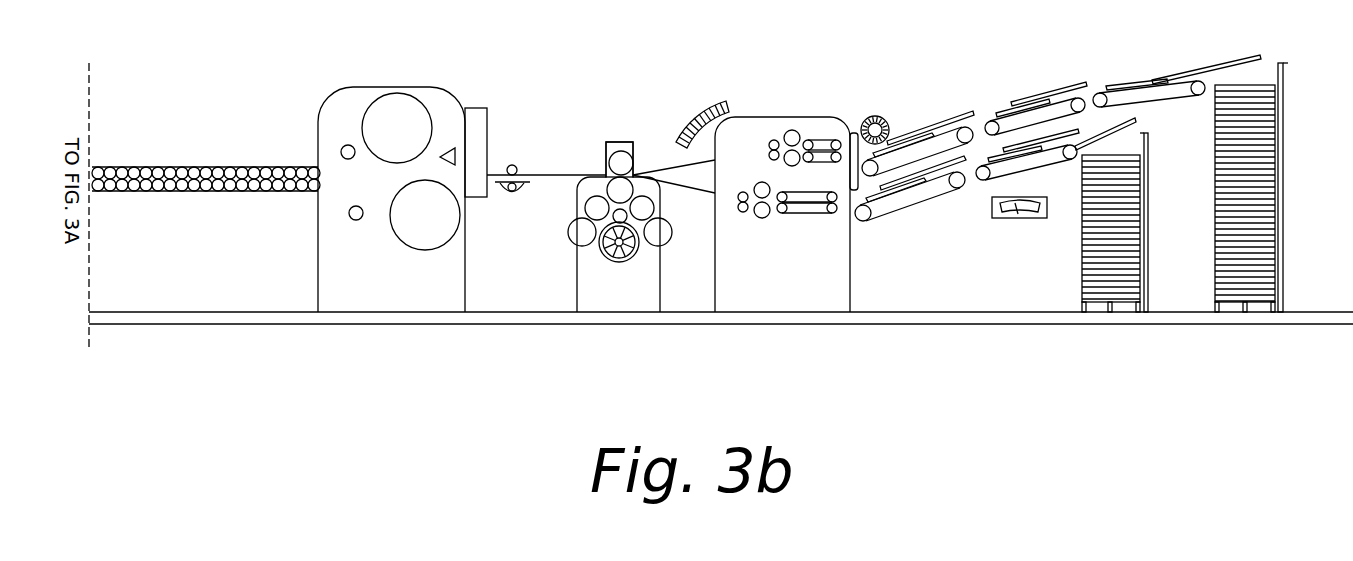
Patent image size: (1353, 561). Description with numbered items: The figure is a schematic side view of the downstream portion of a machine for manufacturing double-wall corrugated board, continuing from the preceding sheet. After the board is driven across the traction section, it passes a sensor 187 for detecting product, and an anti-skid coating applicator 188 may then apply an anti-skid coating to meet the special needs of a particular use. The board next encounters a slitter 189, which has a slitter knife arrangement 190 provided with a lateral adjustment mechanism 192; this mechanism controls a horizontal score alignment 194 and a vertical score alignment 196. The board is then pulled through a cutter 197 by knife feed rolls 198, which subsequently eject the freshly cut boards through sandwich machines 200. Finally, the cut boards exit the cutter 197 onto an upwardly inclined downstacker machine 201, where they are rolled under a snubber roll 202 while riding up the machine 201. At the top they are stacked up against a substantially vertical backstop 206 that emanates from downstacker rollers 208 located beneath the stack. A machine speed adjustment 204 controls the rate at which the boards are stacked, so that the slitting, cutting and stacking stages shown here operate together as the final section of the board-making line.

The sensor 187 is at (447, 148).
The anti-skid coating applicator 188 is at (512, 163).
The slitter 189 is at (607, 140).
The slitter knife arrangement 190 is at (623, 160).
The lateral adjustment mechanism 192 is at (624, 260).
The horizontal score alignment 194 is at (594, 180).
The vertical score alignment 196 is at (652, 188).
The cutter 197 is at (825, 117).
The knife feed rolls 198 is at (769, 148).
The sandwich machines 200 is at (838, 160).
The upwardly inclined downstacker machine 201 is at (902, 209).
The snubber roll 202 is at (877, 116).
The machine speed adjustment 204 is at (1020, 219).
The backstop 206 is at (1145, 134).
The downstacker rollers 208 is at (1148, 294).